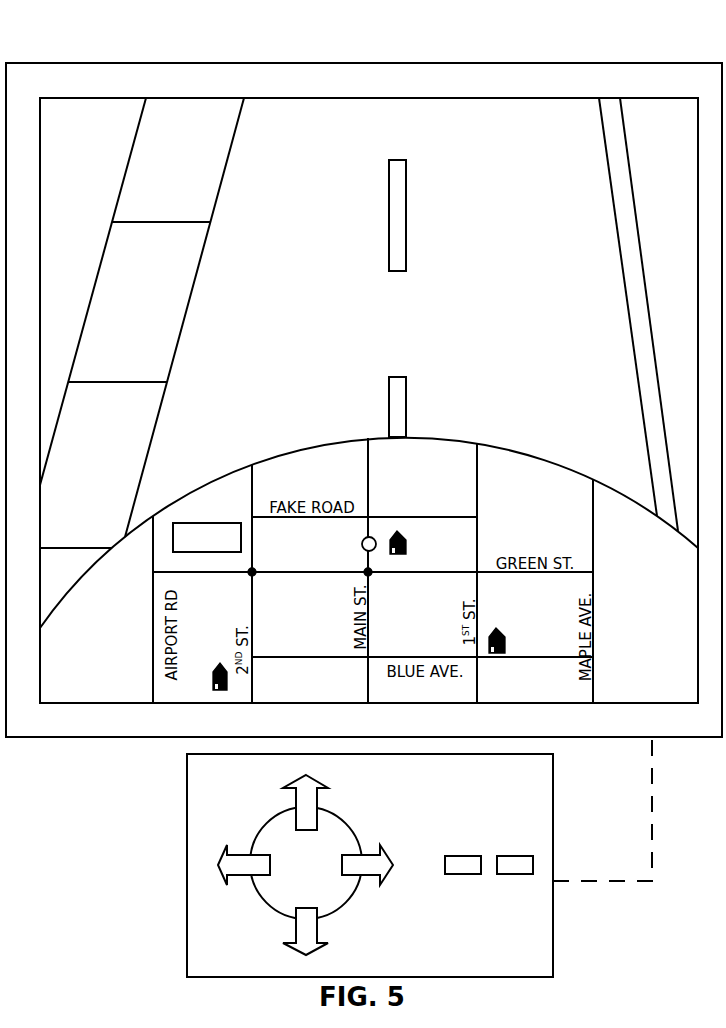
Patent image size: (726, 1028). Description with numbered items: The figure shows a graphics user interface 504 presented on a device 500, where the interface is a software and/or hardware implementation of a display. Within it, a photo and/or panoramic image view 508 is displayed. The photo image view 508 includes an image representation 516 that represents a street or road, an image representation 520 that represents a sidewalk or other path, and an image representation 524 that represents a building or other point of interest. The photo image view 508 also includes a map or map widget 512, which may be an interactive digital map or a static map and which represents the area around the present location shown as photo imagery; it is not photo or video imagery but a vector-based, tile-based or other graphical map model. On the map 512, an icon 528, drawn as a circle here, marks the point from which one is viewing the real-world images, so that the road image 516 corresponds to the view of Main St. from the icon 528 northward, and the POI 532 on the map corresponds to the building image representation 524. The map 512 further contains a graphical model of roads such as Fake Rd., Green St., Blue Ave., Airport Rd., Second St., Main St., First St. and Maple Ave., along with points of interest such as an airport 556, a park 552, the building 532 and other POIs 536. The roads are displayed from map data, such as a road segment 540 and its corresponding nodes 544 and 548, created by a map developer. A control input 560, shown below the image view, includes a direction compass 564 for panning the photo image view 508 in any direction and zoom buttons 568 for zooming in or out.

The device 500 is at (623, 63).
The graphics user interface 504 is at (115, 98).
The photo and/or panoramic image view 508 is at (443, 135).
The map or map widget 512 is at (432, 440).
The image representation of a street or road 516 is at (349, 298).
The image representation of a sidewalk or other path 520 is at (142, 317).
The image representation of a building or other POI 524 is at (640, 314).
The icon 528 is at (362, 544).
The POI (building) 532 is at (400, 533).
The other POIs 536 is at (520, 627).
The road segment 540 is at (328, 572).
The node 544 is at (369, 574).
The node 548 is at (250, 572).
The park 552 is at (648, 596).
The airport 556 is at (103, 631).
The control input 560 is at (187, 795).
The direction compass 564 is at (338, 812).
The zoom buttons 568 is at (518, 874).